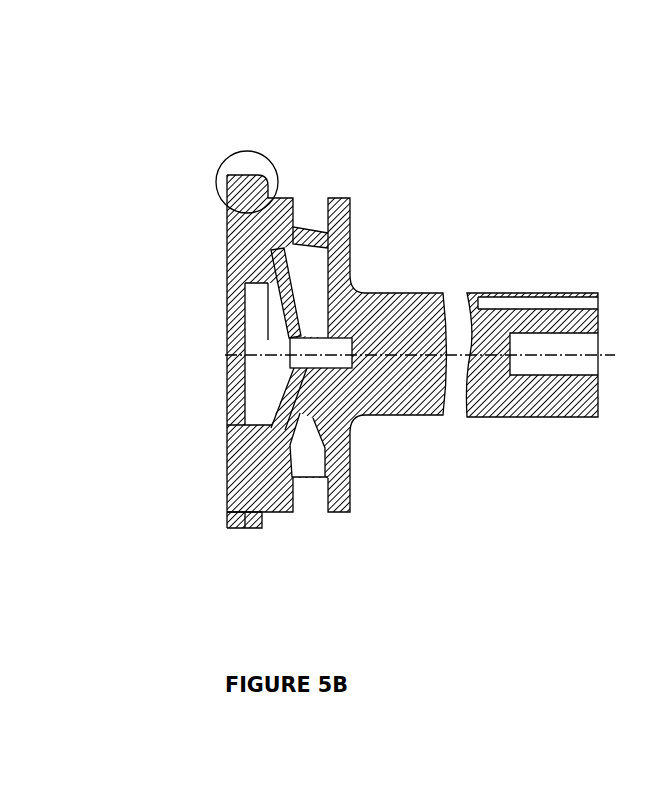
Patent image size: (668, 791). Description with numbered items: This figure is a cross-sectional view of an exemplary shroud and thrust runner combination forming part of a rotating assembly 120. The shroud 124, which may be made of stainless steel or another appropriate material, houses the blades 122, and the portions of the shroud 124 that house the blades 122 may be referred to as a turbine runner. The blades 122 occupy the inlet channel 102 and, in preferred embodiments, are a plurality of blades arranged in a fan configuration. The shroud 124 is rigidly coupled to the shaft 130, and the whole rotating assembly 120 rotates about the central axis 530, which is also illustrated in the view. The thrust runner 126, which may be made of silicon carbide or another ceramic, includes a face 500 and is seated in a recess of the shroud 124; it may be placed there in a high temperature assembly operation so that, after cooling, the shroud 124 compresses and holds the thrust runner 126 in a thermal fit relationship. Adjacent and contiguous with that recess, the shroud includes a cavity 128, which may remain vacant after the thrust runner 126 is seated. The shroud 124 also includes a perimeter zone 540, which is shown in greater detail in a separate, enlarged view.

The face 500 is at (198, 461).
The inlet channel 102 is at (302, 213).
The rotating assembly 120 is at (470, 213).
The blades 122 is at (297, 330).
The shroud 124 is at (290, 508).
The thrust runner 126 is at (245, 472).
The cavity 128 is at (260, 522).
The shaft 130 is at (537, 400).
The central axis 530 is at (545, 355).
The perimeter zone 540 is at (233, 160).